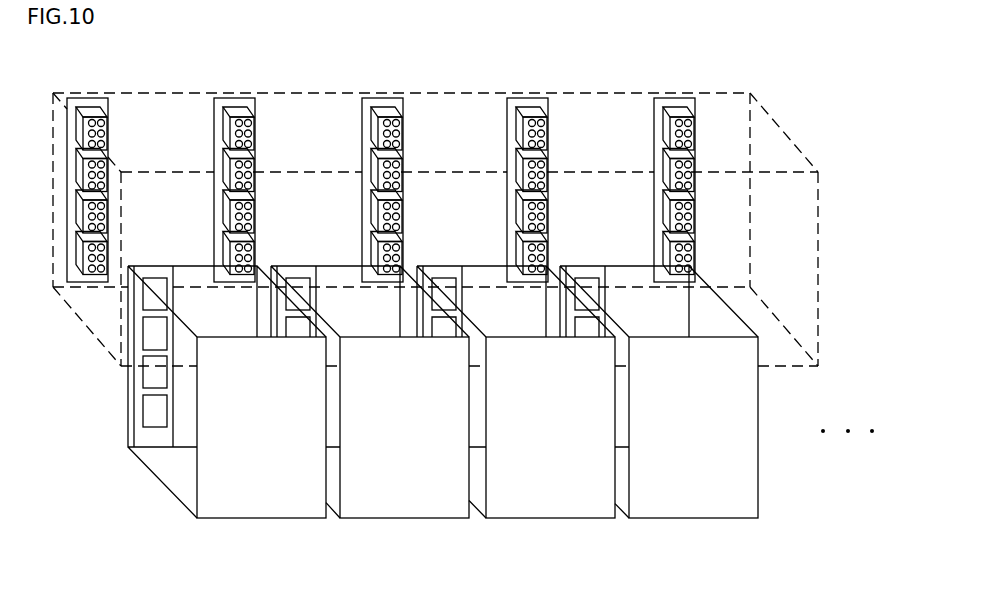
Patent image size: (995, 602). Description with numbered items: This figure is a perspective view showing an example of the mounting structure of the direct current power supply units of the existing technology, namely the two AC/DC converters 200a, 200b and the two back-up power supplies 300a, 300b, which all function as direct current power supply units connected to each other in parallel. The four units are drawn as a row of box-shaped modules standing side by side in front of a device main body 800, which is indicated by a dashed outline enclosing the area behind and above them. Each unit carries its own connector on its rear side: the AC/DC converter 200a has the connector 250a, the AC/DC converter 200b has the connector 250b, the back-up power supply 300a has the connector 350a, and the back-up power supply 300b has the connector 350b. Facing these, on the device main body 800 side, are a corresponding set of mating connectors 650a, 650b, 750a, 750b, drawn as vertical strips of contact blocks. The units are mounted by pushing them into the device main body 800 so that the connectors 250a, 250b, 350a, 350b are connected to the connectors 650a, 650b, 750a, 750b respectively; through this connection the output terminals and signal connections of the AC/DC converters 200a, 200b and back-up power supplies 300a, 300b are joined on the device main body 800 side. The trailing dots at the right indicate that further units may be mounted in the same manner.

The connector 650a is at (92, 108).
The connector 650b is at (238, 108).
The connector 750a is at (386, 108).
The connector 750b is at (531, 108).
The device main body 800 is at (777, 122).
The connector 250a is at (158, 270).
The connector 250b is at (293, 270).
The connector 350a is at (442, 272).
The connector 350b is at (586, 272).
The AC/DC converter 200a is at (257, 503).
The AC/DC converter 200b is at (410, 500).
The back-up power supply 300a is at (530, 500).
The back-up power supply 300b is at (678, 498).